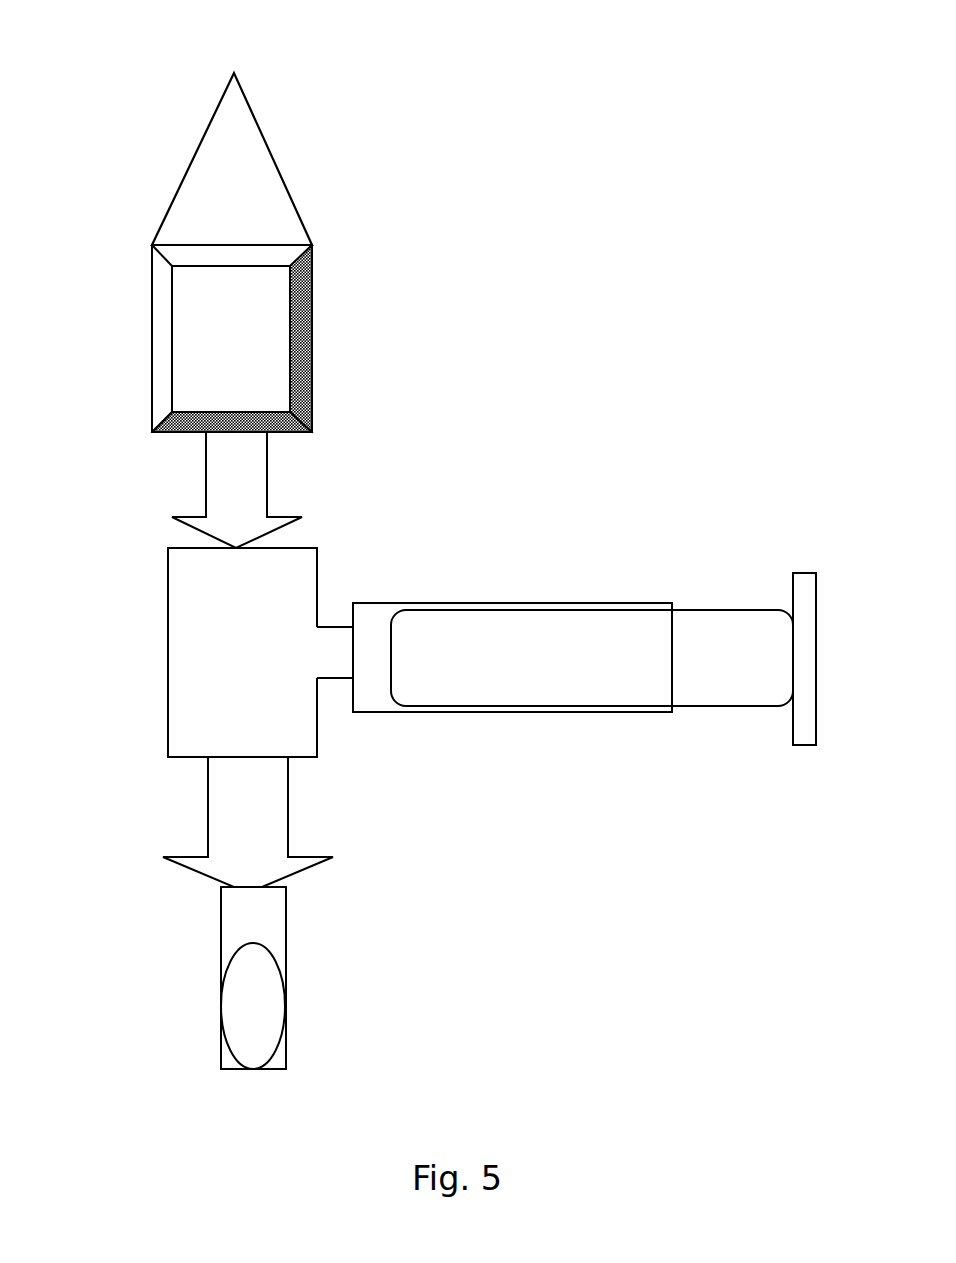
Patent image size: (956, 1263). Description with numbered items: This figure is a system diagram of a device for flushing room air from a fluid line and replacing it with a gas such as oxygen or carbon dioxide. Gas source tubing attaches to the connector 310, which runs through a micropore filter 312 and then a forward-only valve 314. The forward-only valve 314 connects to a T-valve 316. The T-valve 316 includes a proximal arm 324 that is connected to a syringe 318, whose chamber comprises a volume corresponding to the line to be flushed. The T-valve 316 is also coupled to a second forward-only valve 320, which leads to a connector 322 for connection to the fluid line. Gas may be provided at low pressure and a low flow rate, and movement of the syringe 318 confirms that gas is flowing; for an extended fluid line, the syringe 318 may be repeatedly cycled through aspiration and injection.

The connector 310 is at (250, 148).
The micropore filter 312 is at (281, 323).
The forward-only valve 314 is at (222, 473).
The T-valve 316 is at (190, 637).
The syringe 318 is at (555, 627).
The second forward-only valve 320 is at (268, 819).
The connector 322 is at (273, 932).
The proximal arm 324 is at (333, 640).